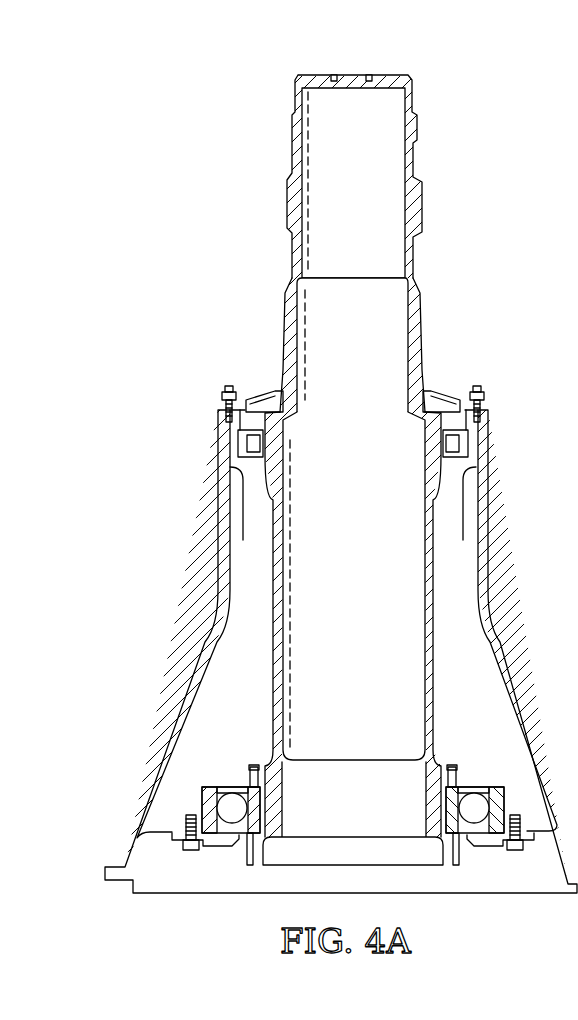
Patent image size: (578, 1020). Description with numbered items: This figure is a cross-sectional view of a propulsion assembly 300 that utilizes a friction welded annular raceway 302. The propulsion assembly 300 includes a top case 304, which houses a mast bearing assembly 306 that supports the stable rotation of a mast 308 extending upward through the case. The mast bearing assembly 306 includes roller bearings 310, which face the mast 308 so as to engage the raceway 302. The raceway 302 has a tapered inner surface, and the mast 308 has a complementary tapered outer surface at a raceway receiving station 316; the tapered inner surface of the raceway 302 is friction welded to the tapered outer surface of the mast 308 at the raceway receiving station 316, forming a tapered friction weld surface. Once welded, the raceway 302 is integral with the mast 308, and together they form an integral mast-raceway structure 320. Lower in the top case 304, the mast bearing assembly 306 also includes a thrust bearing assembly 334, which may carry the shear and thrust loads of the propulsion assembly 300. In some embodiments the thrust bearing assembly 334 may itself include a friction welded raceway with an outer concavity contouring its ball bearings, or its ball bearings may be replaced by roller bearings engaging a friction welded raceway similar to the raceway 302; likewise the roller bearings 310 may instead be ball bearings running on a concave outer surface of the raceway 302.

The propulsion assembly 300 is at (169, 307).
The annular raceway 302 is at (257, 391).
The top case 304 is at (197, 667).
The mast bearing assembly 306 is at (241, 488).
The mast 308 is at (287, 191).
The roller bearings 310 is at (465, 445).
The raceway receiving station 316 is at (450, 481).
The integral mast-raceway structure 320 is at (426, 335).
The thrust bearing assembly 334 is at (213, 862).